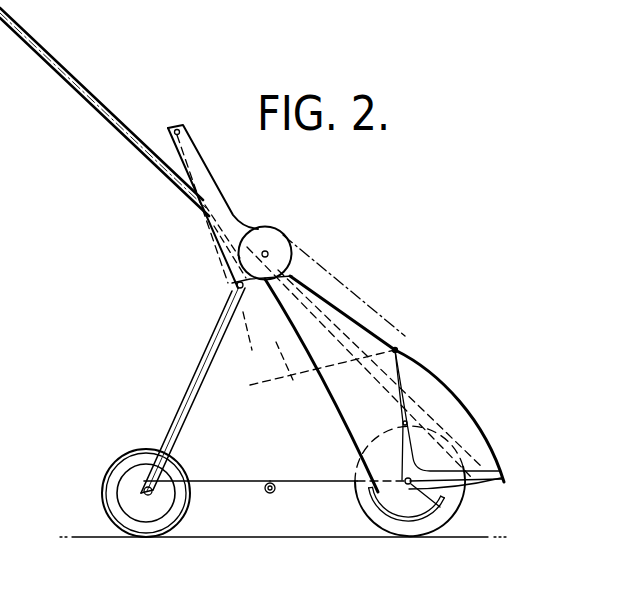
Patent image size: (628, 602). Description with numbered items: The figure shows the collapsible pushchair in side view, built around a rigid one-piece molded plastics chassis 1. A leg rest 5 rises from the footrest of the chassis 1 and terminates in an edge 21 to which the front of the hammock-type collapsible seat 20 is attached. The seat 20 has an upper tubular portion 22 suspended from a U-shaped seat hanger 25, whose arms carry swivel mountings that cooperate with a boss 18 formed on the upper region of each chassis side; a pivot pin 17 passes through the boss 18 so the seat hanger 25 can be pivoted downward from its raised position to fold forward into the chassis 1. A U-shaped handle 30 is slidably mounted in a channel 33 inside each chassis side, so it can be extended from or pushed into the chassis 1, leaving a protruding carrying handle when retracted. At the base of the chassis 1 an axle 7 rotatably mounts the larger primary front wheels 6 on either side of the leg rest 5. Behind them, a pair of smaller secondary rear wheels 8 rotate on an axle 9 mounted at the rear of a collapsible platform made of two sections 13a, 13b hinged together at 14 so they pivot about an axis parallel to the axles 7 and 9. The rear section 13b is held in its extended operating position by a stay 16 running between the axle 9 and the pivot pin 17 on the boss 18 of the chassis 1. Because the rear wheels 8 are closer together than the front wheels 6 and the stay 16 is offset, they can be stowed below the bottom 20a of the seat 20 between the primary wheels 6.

The chassis 1 is at (328, 396).
The leg rest 5 is at (408, 372).
The primary front wheels 6 is at (412, 525).
The axle 7 is at (438, 504).
The secondary rear wheels 8 is at (148, 531).
The axle 9 is at (120, 490).
The platform section 13a is at (312, 480).
The platform section 13b is at (218, 480).
The hinge 14 is at (272, 494).
The stay 16 is at (188, 392).
The pivot pin 17 is at (268, 252).
The boss 18 is at (268, 236).
The seat 20 is at (251, 384).
The bottom of seat 20a is at (268, 346).
The edge 21 is at (396, 349).
The upper tubular portion 22 is at (177, 129).
The seat hanger 25 is at (208, 188).
The handle 30 is at (97, 104).
The channel 33 is at (438, 428).